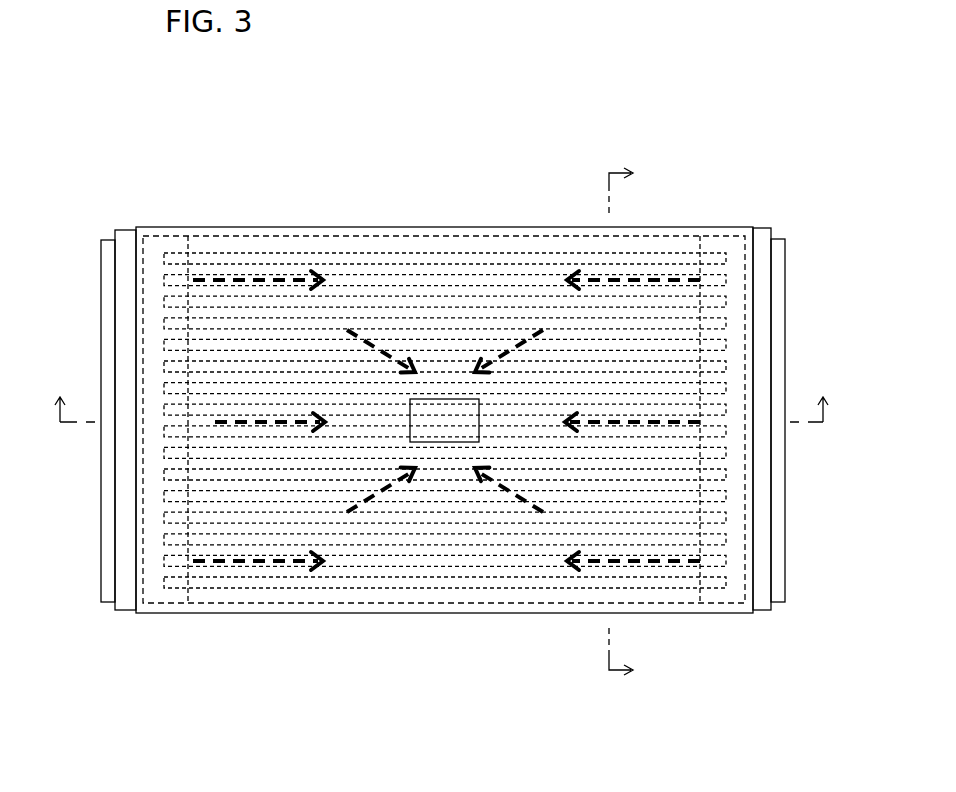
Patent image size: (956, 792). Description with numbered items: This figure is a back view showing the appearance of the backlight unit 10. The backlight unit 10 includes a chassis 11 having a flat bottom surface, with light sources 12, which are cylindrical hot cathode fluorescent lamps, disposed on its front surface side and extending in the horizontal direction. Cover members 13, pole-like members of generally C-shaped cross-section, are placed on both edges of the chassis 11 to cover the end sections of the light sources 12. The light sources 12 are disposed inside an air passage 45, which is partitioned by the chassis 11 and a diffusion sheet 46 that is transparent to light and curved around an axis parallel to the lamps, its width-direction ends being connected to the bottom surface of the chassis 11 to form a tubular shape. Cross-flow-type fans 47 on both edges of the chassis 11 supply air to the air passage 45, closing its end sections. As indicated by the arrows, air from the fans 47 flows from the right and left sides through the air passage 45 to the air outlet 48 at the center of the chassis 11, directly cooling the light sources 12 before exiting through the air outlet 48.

The backlight unit 10 is at (150, 140).
The chassis 11 is at (225, 227).
The light sources 12 is at (552, 275).
The cover members 13 is at (153, 248).
The air passage 45 is at (341, 245).
The diffusion sheet 46 is at (395, 233).
The fans 47 is at (125, 240).
The air outlet 48 is at (445, 399).